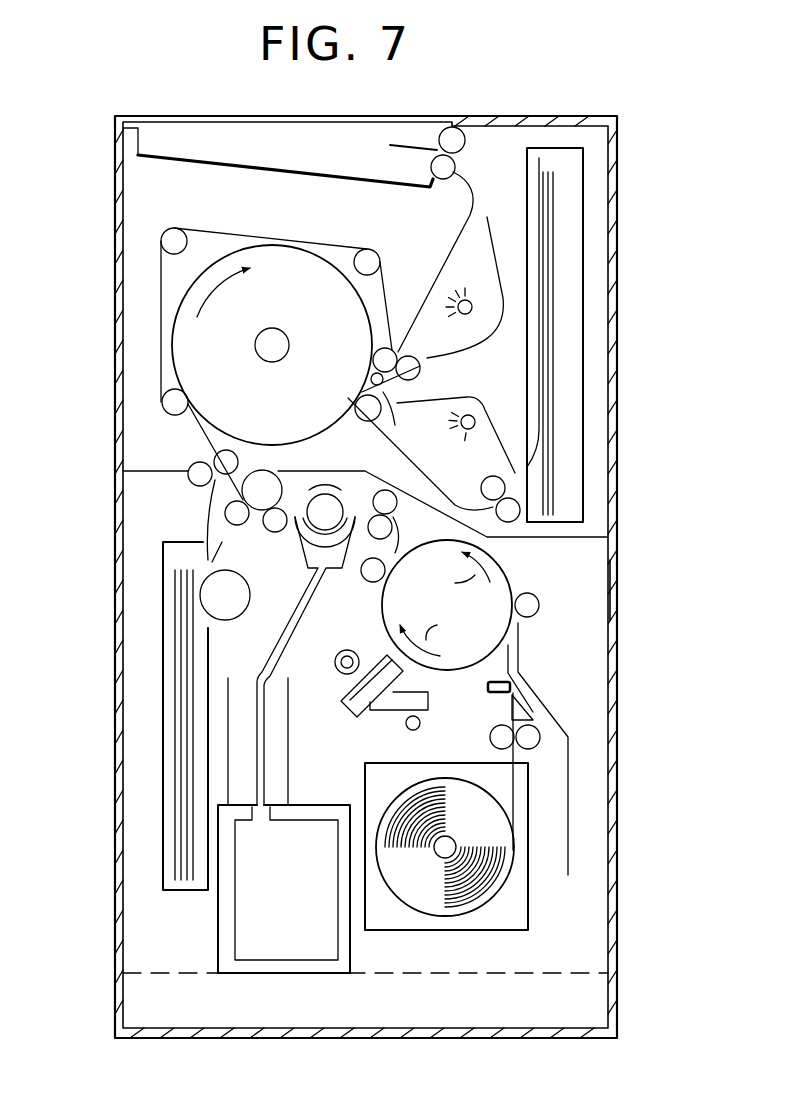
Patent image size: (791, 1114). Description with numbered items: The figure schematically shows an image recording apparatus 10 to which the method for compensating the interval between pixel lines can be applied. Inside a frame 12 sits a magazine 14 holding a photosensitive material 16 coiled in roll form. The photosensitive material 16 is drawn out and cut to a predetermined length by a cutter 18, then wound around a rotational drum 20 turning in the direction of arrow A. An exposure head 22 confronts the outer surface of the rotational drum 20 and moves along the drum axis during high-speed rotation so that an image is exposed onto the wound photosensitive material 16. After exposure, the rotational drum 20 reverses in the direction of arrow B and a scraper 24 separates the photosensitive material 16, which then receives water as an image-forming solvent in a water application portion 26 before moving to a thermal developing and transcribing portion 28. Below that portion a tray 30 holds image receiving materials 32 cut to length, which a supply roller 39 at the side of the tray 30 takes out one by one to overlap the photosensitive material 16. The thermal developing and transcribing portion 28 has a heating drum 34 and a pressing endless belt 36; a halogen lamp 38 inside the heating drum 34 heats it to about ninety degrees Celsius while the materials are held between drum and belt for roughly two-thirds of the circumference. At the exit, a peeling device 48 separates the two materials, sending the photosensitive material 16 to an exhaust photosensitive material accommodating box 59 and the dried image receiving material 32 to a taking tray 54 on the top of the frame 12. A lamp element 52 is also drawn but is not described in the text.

The image recording apparatus 10 is at (531, 100).
The frame 12 is at (617, 590).
The magazine 14 is at (528, 905).
The photosensitive material 16 is at (513, 812).
The cutter 18 is at (505, 699).
The rotational drum 20 is at (513, 580).
The exposure head 22 is at (357, 720).
The scraper 24 is at (407, 539).
The water application portion 26 is at (334, 580).
The thermal developing and transcribing portion 28 is at (282, 213).
The tray 30 is at (163, 645).
The image receiving materials 32 is at (175, 752).
The heating drum 34 is at (303, 444).
The pressing endless belt 36 is at (233, 237).
The halogen lamp 38 is at (287, 328).
The supply roller 39 is at (244, 618).
The peeling device 48 is at (434, 459).
The lamp 52 is at (455, 352).
The taking tray 54 is at (357, 170).
The exhaust photosensitive material accommodating box 59 is at (584, 405).